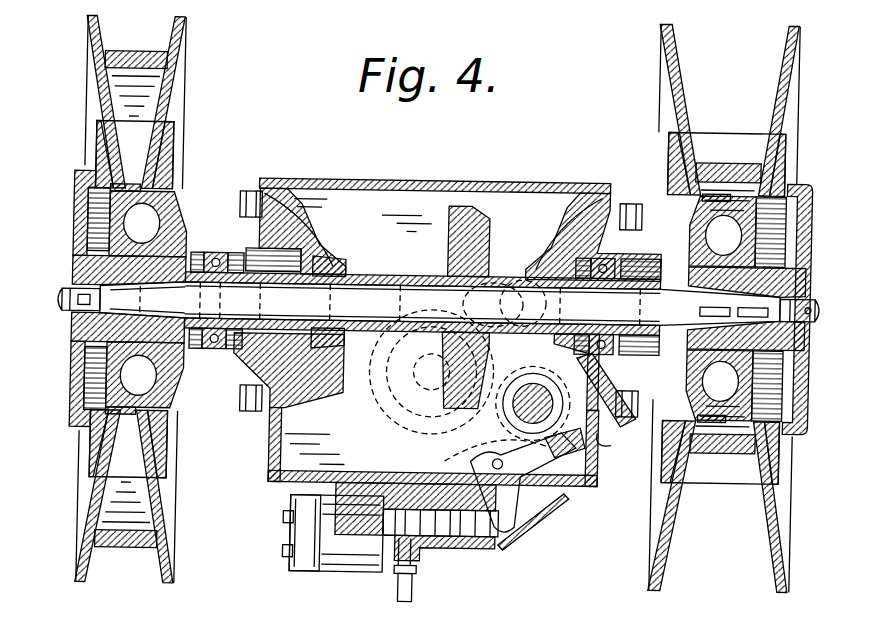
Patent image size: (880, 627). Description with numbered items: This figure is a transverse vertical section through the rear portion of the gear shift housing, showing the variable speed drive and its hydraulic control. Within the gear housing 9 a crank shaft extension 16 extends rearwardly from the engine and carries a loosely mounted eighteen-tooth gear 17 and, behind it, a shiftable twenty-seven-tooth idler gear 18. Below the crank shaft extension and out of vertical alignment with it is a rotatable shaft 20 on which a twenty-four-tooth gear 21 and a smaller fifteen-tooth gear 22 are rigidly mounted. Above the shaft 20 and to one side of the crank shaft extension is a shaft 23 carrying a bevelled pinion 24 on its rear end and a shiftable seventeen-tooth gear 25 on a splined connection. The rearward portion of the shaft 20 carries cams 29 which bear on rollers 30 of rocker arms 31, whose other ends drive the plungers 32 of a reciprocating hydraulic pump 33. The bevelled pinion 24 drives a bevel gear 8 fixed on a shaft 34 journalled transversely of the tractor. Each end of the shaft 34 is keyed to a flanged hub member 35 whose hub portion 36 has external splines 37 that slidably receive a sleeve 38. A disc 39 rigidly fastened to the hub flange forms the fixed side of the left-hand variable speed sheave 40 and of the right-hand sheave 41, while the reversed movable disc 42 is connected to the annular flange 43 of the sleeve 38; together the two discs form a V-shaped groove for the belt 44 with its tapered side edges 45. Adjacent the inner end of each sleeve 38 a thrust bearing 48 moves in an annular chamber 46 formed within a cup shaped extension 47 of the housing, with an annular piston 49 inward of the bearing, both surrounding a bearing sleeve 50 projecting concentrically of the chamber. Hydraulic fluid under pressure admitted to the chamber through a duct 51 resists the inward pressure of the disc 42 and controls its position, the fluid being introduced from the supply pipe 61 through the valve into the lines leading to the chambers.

The bevel gear 8 is at (447, 234).
The gear housing 9 is at (422, 318).
The crank shaft extension 16 is at (421, 430).
The 18-tooth gear 17 is at (382, 394).
The shiftable idler gear 18 is at (444, 440).
The rotatable shaft 20 is at (588, 438).
The 24-tooth gear 21 is at (488, 436).
The 15-tooth gear 22 is at (541, 403).
The shaft 23 is at (600, 306).
The bevelled pinion 24 is at (520, 258).
The 17-tooth gear 25 is at (503, 255).
The cams 29 is at (526, 403).
The rollers 30 is at (592, 476).
The rocker arms 31 is at (545, 522).
The plungers 32 is at (474, 541).
The reciprocating hydraulic pump 33 is at (364, 558).
The shaft 34 is at (439, 304).
The flanged hub members 35 is at (76, 237).
The hub portions 36 is at (150, 238).
The external splines 37 is at (150, 257).
The sleeves 38 is at (165, 205).
The disc 39 is at (104, 78).
The variable speed sheave 40 is at (431, 304).
The variable speed sheave 41 is at (795, 540).
The other side 42 is at (160, 113).
The annular flange 43 is at (168, 147).
The belt 44 is at (119, 50).
The tapered side edges 45 is at (92, 59).
The annular chamber 46 is at (290, 240).
The cup shaped extension 47 is at (228, 205).
The thrust bearing 48 is at (222, 348).
The annular piston 49 is at (285, 205).
The bearing sleeve 50 is at (320, 252).
The duct 51 is at (285, 383).
The pipe 61 is at (419, 592).